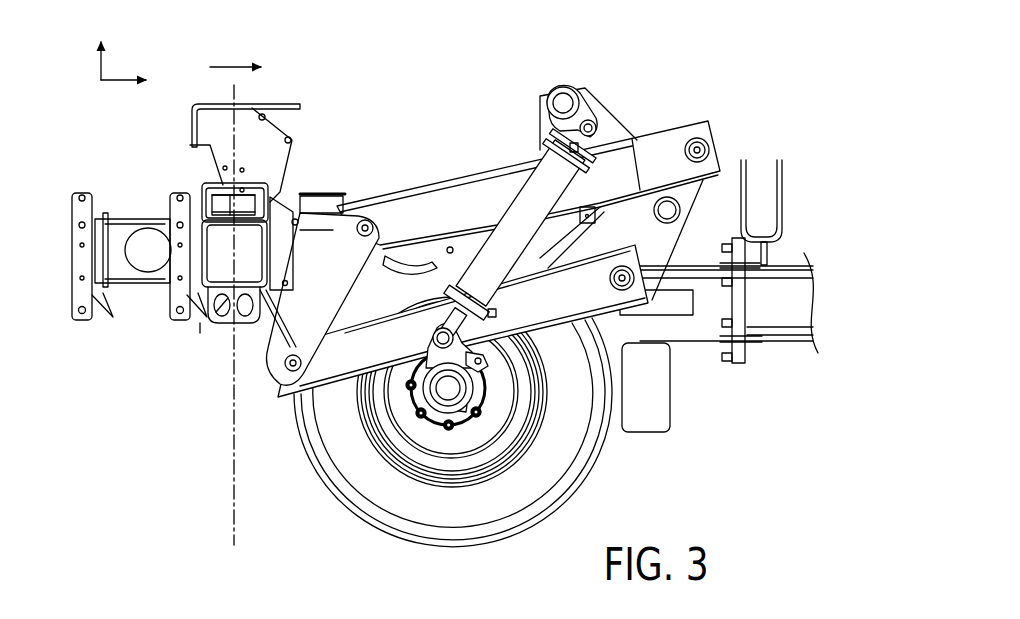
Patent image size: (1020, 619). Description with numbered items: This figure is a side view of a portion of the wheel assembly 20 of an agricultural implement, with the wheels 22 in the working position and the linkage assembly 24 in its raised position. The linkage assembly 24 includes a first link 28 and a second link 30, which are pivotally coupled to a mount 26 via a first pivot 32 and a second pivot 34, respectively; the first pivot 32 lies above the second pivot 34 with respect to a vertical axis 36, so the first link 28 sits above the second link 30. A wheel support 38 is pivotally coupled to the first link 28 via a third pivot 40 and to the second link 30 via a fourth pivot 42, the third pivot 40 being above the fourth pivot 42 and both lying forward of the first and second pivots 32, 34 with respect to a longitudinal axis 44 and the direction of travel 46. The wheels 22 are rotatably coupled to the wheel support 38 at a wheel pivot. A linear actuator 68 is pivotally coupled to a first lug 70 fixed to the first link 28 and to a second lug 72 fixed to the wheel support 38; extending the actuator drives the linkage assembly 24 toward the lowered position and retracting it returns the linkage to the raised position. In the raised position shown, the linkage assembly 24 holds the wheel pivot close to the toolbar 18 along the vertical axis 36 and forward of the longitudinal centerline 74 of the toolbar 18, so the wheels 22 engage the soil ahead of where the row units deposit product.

The toolbar 18 is at (220, 237).
The wheel assembly 20 is at (624, 452).
The wheels 22 is at (325, 438).
The linkage assembly 24 is at (672, 118).
The mount 26 is at (323, 189).
The first link 28 is at (641, 131).
The second link 30 is at (326, 399).
The first pivot 32 is at (369, 224).
The second pivot 34 is at (288, 369).
The vertical axis 36 is at (102, 64).
The wheel support 38 is at (607, 321).
The third pivot 40 is at (698, 150).
The fourth pivot 42 is at (626, 274).
The longitudinal axis 44 is at (102, 82).
The direction of travel 46 is at (232, 63).
The linear actuator 68 is at (533, 205).
The first lug 70 is at (574, 79).
The second lug 72 is at (423, 362).
The longitudinal centerline 74 is at (233, 418).